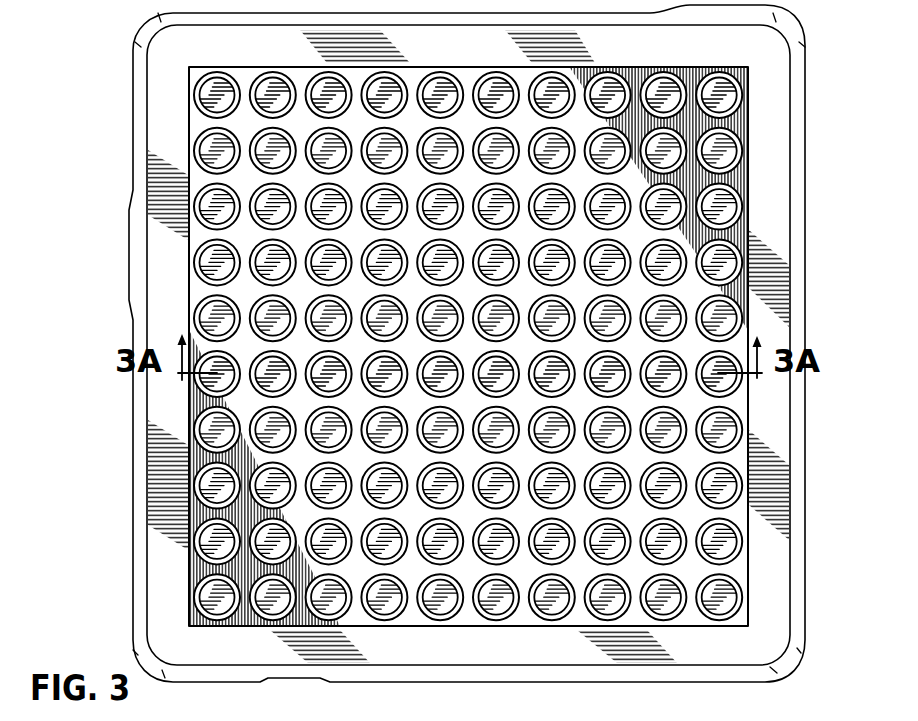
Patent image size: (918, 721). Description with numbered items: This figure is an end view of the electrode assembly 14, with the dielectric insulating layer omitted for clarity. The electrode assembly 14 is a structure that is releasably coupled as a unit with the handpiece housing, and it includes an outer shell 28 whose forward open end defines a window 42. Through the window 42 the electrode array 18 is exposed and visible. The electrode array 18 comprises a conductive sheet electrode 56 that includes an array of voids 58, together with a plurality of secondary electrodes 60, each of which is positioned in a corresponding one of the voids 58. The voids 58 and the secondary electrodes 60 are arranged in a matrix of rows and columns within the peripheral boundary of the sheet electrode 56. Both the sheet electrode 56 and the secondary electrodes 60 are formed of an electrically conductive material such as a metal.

The electrode assembly 14 is at (131, 219).
The electrode array 18 is at (187, 134).
The outer shell 28 is at (134, 591).
The window 42 is at (478, 628).
The conductive sheet electrode 56 is at (703, 67).
The voids 58 is at (734, 151).
The secondary electrodes 60 is at (318, 83).